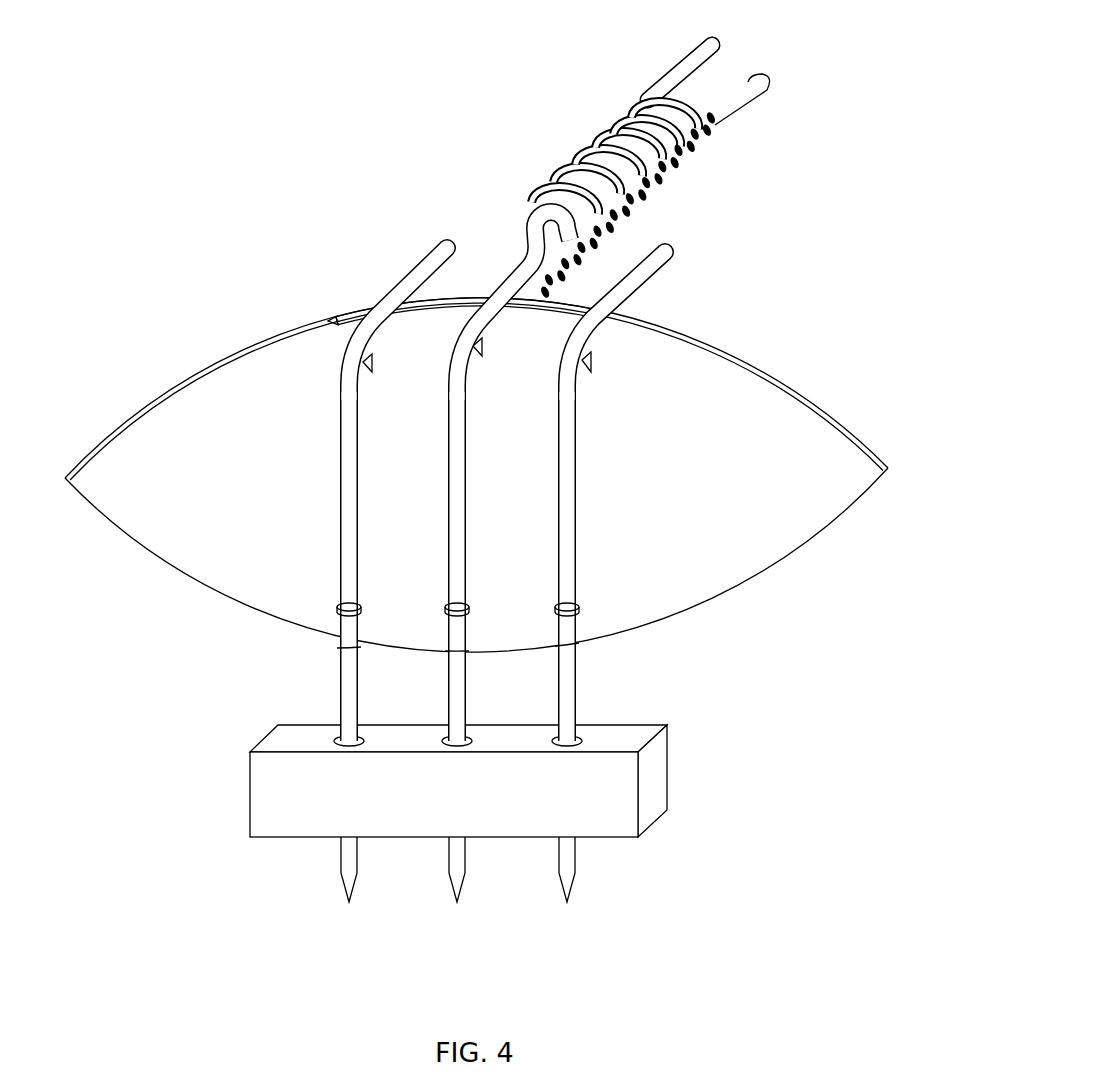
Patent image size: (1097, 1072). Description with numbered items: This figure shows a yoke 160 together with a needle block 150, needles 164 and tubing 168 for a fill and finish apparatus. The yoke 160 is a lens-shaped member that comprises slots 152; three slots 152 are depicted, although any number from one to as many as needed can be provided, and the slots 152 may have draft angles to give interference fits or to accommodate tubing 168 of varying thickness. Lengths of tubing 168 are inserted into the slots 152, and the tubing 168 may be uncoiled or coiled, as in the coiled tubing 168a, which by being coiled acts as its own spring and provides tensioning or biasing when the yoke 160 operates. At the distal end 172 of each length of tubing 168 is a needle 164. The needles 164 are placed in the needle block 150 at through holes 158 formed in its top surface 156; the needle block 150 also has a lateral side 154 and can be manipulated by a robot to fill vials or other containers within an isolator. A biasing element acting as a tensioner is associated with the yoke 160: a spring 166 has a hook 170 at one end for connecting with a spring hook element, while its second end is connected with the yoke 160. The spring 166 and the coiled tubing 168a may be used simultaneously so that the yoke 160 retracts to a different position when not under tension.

The needle block 150 is at (500, 812).
The slots 152 is at (342, 325).
The lateral side 154 is at (653, 822).
The top surface 156 is at (282, 743).
The through holes 158 is at (337, 740).
The yoke 160 is at (872, 393).
The needle 164 is at (572, 883).
The spring 166 is at (713, 137).
The tubing 168 is at (407, 277).
The coiled tubing 168a is at (673, 65).
The hook 170 is at (748, 77).
The distal end 172 is at (578, 680).